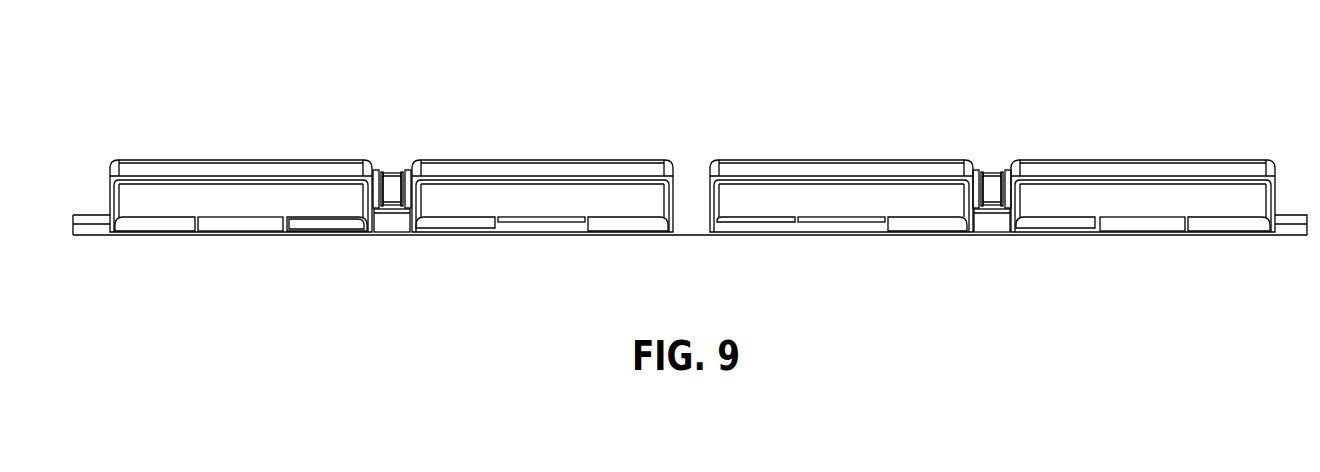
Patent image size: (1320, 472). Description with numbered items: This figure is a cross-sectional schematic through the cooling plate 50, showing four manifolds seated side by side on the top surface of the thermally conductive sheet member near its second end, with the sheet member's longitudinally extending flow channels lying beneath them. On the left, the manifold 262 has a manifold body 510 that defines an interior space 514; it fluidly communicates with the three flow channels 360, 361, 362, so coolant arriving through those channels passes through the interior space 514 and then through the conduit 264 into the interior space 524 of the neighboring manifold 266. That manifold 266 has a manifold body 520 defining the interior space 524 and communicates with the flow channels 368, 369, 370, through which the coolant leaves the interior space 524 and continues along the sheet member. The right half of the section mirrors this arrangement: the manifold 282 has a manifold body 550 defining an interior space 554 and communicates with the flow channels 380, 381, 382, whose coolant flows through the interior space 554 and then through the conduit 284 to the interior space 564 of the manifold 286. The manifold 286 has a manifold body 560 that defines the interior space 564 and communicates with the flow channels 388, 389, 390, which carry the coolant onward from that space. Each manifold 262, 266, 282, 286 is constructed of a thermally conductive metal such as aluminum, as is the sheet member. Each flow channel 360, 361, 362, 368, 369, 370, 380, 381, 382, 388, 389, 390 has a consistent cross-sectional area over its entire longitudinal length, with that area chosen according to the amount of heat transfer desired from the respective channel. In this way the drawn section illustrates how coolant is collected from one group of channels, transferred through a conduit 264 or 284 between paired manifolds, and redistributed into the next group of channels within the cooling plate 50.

The battery system 50 is at (690, 128).
The manifold body 510 is at (241, 155).
The manifold body 520 is at (542, 155).
The manifold body 550 is at (1143, 155).
The manifold body 560 is at (841, 155).
The manifold 262 is at (241, 125).
The manifold 266 is at (542, 125).
The manifold 282 is at (1143, 125).
The manifold 286 is at (841, 125).
The interior space 514 is at (241, 167).
The interior space 524 is at (542, 167).
The interior space 554 is at (1143, 167).
The interior space 564 is at (841, 167).
The conduit 264 is at (392, 165).
The conduit 284 is at (992, 165).
The flow channel 360 is at (155, 256).
The flow channel 361 is at (240, 256).
The flow channel 362 is at (327, 256).
The flow channel 368 is at (455, 256).
The flow channel 369 is at (541, 256).
The flow channel 370 is at (628, 256).
The flow channel 380 is at (1229, 256).
The flow channel 381 is at (1142, 256).
The flow channel 382 is at (1055, 256).
The flow channel 388 is at (927, 256).
The flow channel 389 is at (841, 256).
The flow channel 390 is at (756, 256).